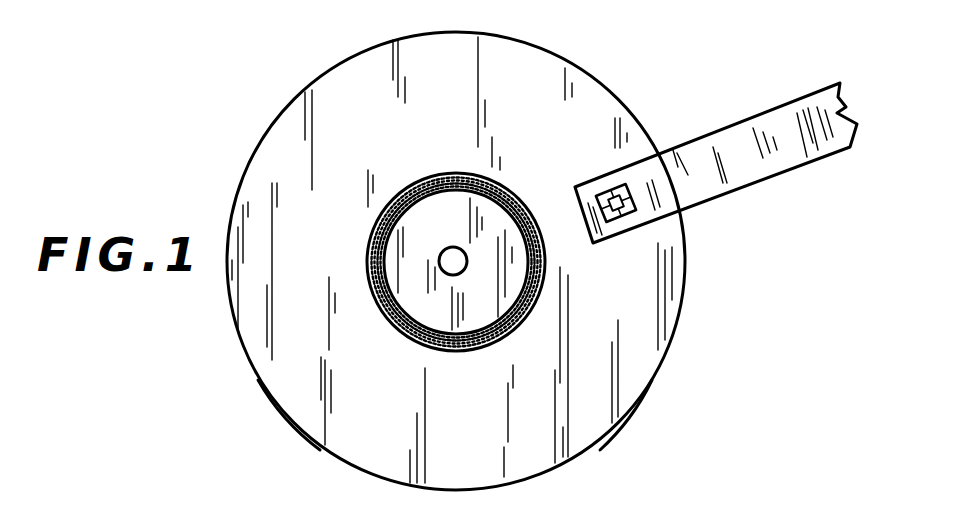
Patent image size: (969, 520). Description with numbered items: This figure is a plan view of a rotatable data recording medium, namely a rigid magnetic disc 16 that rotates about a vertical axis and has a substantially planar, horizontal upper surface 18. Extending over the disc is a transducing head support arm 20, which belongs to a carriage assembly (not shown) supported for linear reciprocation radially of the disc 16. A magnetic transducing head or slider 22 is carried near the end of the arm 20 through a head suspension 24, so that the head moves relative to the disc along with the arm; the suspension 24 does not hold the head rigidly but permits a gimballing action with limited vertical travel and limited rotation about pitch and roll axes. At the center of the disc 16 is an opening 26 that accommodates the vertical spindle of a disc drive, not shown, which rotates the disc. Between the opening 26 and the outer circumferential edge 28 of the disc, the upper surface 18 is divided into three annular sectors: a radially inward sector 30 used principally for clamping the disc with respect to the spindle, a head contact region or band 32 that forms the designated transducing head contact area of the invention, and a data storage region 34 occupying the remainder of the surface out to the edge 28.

The rigid magnetic disc 16 is at (285, 143).
The upper surface 18 is at (395, 138).
The transducing head support arm 20 is at (770, 175).
The magnetic transducing head or slider 22 is at (613, 226).
The head suspension 24 is at (614, 197).
The opening 26 is at (451, 249).
The outer circumferential edge 28 is at (652, 380).
The radially inward sector 30 is at (427, 307).
The head contact region 32 is at (369, 251).
The data storage region 34 is at (300, 402).